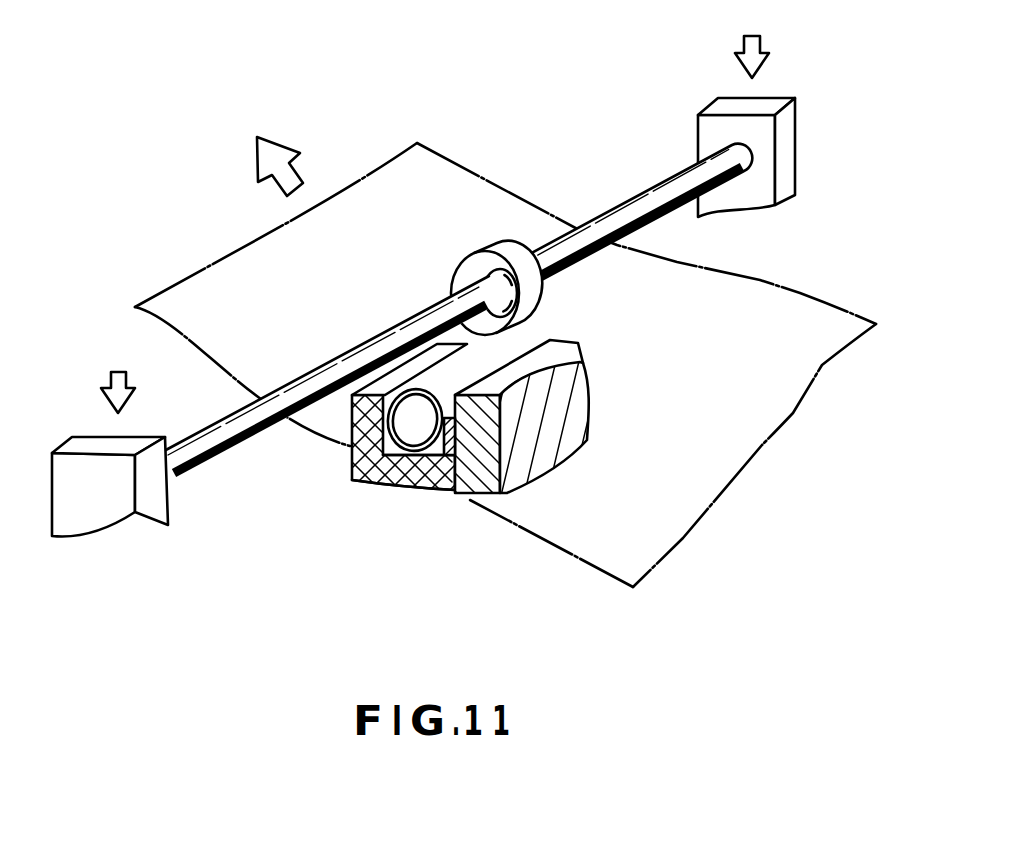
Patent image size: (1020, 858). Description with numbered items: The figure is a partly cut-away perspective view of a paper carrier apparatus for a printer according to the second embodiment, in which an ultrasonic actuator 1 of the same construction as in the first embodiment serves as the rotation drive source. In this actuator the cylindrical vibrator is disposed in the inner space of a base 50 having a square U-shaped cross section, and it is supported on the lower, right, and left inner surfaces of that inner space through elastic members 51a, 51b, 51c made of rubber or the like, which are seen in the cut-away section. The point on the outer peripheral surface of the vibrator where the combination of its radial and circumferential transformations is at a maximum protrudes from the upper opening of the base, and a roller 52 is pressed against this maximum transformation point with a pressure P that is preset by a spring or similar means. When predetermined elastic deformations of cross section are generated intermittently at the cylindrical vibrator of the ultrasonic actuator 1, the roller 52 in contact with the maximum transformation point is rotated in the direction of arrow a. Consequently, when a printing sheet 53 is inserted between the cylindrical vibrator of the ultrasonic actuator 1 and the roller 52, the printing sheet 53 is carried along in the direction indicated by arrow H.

The ultrasonic actuator 1 is at (412, 433).
The base 50 is at (467, 480).
The elastic member 51a is at (352, 452).
The elastic member 51b is at (441, 462).
The elastic member 51c is at (415, 445).
The roller 52 is at (526, 248).
The printing sheet 53 is at (822, 365).
The arrow a is at (517, 294).
The pressure P is at (435, 209).
The arrow H is at (270, 151).